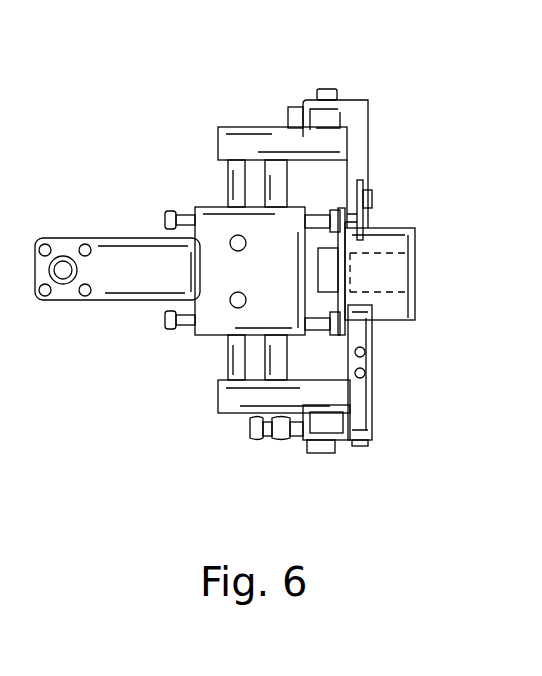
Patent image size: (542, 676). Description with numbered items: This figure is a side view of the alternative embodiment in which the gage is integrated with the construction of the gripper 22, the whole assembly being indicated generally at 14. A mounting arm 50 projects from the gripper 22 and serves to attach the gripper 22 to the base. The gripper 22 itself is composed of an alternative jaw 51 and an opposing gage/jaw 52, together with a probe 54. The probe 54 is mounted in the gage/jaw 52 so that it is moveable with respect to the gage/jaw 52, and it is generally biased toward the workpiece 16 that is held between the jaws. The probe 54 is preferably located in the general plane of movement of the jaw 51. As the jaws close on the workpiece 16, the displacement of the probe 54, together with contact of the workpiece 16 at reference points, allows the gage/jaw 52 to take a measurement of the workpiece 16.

The clamping assembly 14 is at (148, 100).
The mounting arm 50 is at (135, 238).
The gripper 22 is at (203, 346).
The workpiece 16 is at (398, 228).
The jaw 51 is at (362, 222).
The gage/jaw 52 is at (372, 360).
The probe 54 is at (370, 447).